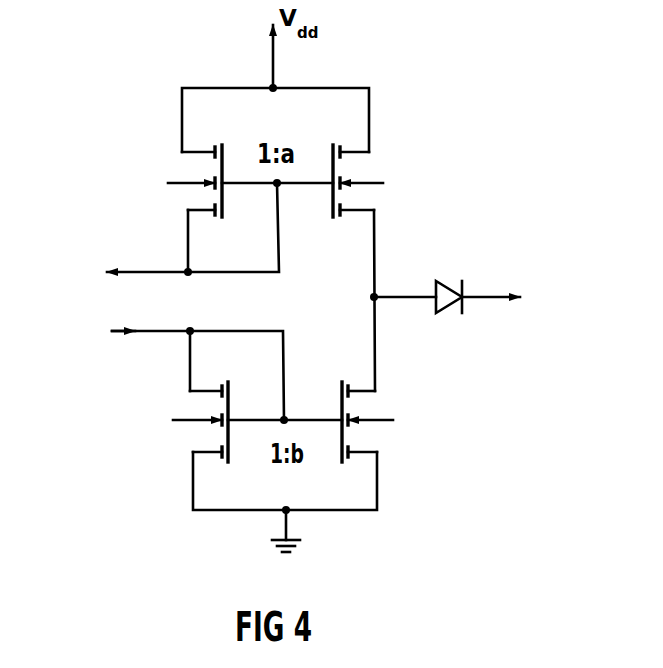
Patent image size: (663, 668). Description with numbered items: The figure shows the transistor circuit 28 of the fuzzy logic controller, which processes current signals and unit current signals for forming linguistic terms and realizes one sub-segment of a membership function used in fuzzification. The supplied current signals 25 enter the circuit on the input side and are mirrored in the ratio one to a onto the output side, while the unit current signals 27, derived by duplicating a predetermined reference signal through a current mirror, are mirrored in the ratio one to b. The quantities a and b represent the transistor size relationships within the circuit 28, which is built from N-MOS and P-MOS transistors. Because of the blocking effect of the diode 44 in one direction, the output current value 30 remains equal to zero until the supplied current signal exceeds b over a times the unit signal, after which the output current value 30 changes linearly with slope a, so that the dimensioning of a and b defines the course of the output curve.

The current signal 25 is at (165, 252).
The unit current signal 27 is at (157, 334).
The transistor circuit 28 is at (175, 443).
The output current value 30 is at (488, 292).
The diode 44 is at (444, 279).